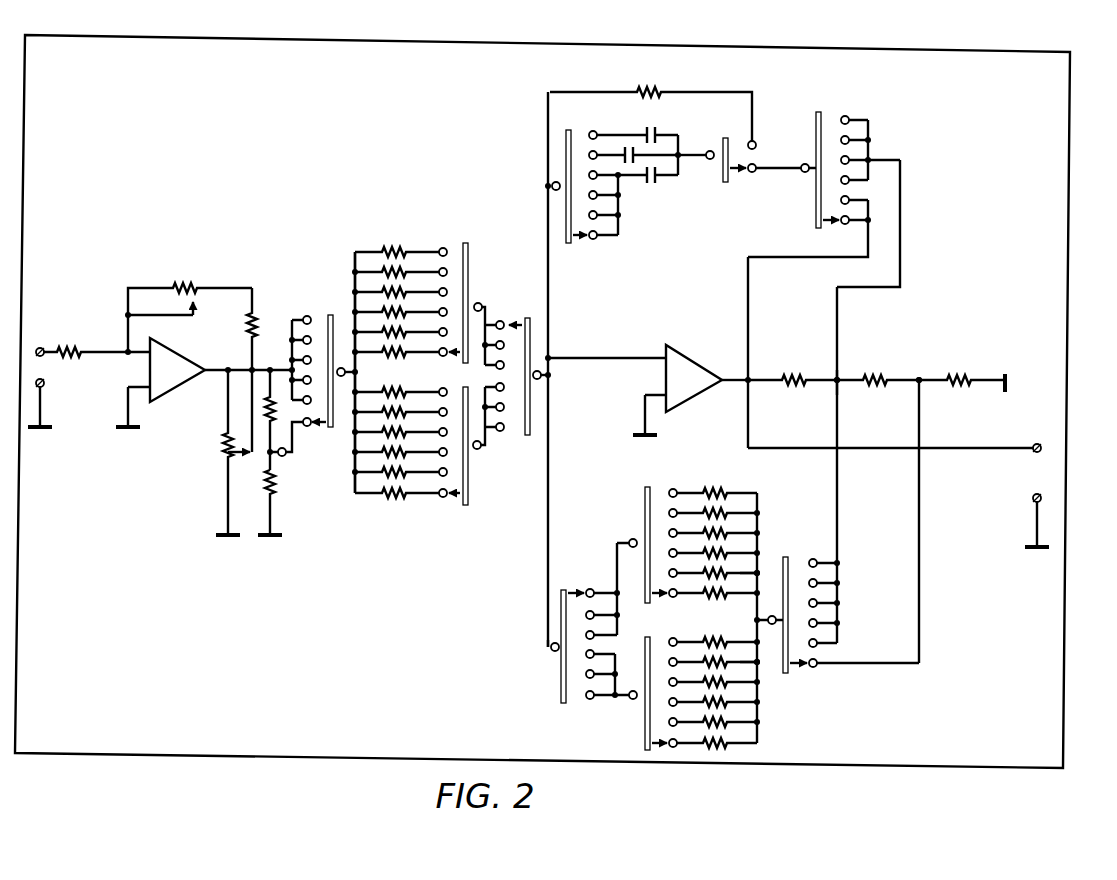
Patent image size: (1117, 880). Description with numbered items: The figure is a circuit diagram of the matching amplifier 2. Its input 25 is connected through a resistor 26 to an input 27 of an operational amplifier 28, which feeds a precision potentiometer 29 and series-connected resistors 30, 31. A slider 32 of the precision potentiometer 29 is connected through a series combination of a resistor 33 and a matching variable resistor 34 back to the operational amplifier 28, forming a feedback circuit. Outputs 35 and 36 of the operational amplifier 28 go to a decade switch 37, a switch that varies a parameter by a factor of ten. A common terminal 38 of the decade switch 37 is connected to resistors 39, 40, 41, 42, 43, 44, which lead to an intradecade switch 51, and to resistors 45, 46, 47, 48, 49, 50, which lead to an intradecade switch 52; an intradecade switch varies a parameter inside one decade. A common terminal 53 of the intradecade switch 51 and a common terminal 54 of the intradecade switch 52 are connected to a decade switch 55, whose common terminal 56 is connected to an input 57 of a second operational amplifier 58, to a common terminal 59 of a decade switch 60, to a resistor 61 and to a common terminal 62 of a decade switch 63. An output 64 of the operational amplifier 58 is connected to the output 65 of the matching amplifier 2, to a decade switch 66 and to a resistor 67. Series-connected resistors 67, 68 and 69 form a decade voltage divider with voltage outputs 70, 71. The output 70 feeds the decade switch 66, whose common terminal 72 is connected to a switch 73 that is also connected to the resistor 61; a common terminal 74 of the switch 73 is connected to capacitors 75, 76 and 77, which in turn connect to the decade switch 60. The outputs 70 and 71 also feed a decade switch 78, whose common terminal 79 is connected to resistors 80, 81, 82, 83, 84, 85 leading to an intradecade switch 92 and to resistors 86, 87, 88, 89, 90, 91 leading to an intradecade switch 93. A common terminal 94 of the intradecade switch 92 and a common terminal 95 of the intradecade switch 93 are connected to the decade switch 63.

The matching amplifier 2 is at (1071, 198).
The input 25 is at (43, 380).
The resistor 26 is at (73, 346).
The input of operational amplifier 27 is at (125, 358).
The operational amplifier 28 is at (172, 383).
The precision potentiometer 29 is at (222, 456).
The resistor 30 is at (265, 409).
The resistor 31 is at (266, 491).
The slider 32 is at (249, 461).
The resistor 33 is at (247, 334).
The matching variable resistor 34 is at (185, 285).
The output of operational amplifier 35 is at (216, 366).
The output of operational amplifier 36 is at (285, 461).
The decade switch 37 is at (325, 312).
The common terminal 38 is at (341, 379).
The resistor 39 is at (398, 247).
The resistor 40 is at (365, 357).
The resistor 41 is at (382, 270).
The resistor 42 is at (382, 290).
The resistor 43 is at (382, 310).
The resistor 44 is at (400, 355).
The resistor 45 is at (395, 391).
The resistor 46 is at (385, 414).
The resistor 47 is at (386, 435).
The resistor 48 is at (386, 455).
The resistor 49 is at (386, 476).
The resistor 50 is at (397, 497).
The intradecade switch 51 is at (464, 242).
The intradecade switch 52 is at (469, 507).
The common terminal 53 is at (480, 299).
The common terminal 54 is at (481, 455).
The decade switch 55 is at (527, 316).
The common terminal 56 is at (541, 383).
The input of operational amplifier 57 is at (645, 356).
The operational amplifier 58 is at (700, 372).
The common terminal 59 is at (553, 192).
The decade switch 60 is at (570, 246).
The resistor 61 is at (646, 88).
The common terminal 62 is at (550, 652).
The decade switch 63 is at (562, 707).
The output of operational amplifier 64 is at (737, 385).
The output 65 is at (1027, 466).
The decade switch 66 is at (821, 110).
The resistor 67 is at (797, 372).
The resistor 68 is at (877, 372).
The resistor 69 is at (957, 372).
The voltage output 70 is at (840, 385).
The voltage output 71 is at (924, 385).
The common terminal 72 is at (802, 174).
The switch 73 is at (724, 187).
The common terminal 74 is at (710, 150).
The capacitor 75 is at (645, 131).
The capacitor 76 is at (628, 167).
The capacitor 77 is at (652, 183).
The decade switch 78 is at (789, 556).
The common terminal 79 is at (771, 627).
The resistor 80 is at (716, 492).
The resistor 81 is at (733, 499).
The resistor 82 is at (745, 521).
The resistor 83 is at (745, 541).
The resistor 84 is at (745, 574).
The resistor 85 is at (745, 594).
The resistor 86 is at (712, 643).
The resistor 87 is at (728, 646).
The resistor 88 is at (745, 683).
The resistor 89 is at (705, 706).
The resistor 90 is at (748, 722).
The resistor 91 is at (745, 743).
The intradecade switch 92 is at (648, 486).
The intradecade switch 93 is at (646, 636).
The common terminal 94 is at (631, 538).
The common terminal 95 is at (631, 690).